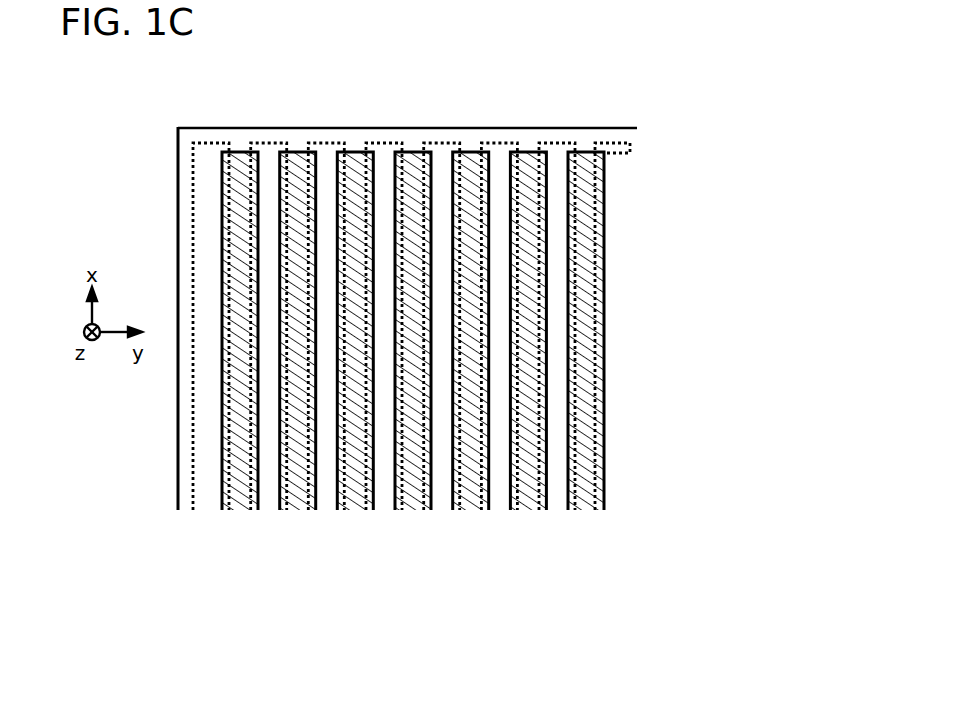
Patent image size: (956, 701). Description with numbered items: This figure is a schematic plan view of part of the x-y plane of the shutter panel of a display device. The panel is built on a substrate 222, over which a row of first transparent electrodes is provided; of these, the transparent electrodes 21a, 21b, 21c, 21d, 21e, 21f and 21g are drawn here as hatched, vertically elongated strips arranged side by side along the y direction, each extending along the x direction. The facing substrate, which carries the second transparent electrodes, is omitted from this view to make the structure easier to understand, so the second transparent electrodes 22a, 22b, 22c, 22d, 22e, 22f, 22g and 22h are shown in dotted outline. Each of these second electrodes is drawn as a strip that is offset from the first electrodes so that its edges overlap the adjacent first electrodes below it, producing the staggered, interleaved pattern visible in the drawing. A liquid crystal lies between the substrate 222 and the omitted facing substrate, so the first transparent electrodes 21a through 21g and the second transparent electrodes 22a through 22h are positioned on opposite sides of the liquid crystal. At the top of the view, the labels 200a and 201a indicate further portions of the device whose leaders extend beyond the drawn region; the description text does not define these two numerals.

The substrate 222 is at (178, 143).
The first wiring / terminal 200a is at (445, 0).
The second wiring / terminal 201a is at (622, 0).
The transparent electrode 22a is at (211, 143).
The transparent electrode 22b is at (269, 143).
The transparent electrode 22c is at (326, 143).
The transparent electrode 22d is at (384, 143).
The transparent electrode 22e is at (442, 143).
The transparent electrode 22f is at (499, 143).
The transparent electrode 22g is at (557, 143).
The transparent electrode 22h is at (613, 143).
The transparent electrode 21a is at (240, 510).
The transparent electrode 21b is at (298, 510).
The transparent electrode 21c is at (355, 510).
The transparent electrode 21d is at (413, 510).
The transparent electrode 21e is at (471, 510).
The transparent electrode 21f is at (528, 510).
The transparent electrode 21g is at (586, 510).